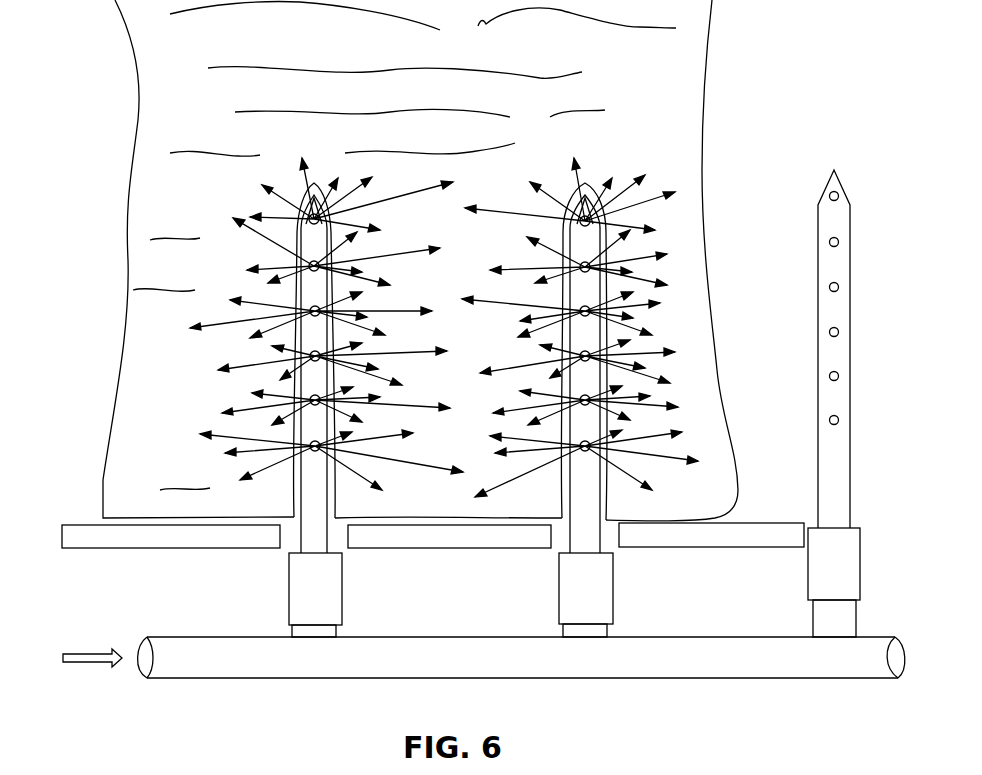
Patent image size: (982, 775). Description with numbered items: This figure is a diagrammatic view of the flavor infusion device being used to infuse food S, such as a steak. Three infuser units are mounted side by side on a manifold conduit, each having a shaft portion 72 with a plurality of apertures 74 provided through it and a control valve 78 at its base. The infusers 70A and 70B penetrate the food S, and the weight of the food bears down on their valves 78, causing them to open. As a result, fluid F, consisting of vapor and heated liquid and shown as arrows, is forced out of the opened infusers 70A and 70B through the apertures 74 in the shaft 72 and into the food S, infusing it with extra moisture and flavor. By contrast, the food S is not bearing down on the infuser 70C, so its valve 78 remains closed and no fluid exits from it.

The infuser 70A is at (268, 592).
The infuser 70B is at (549, 397).
The infuser 70C is at (796, 583).
The shaft portion 72 is at (588, 538).
The apertures 74 is at (582, 452).
The control valve 78 is at (585, 583).
The food S is at (677, 81).
The fluid F is at (77, 660).